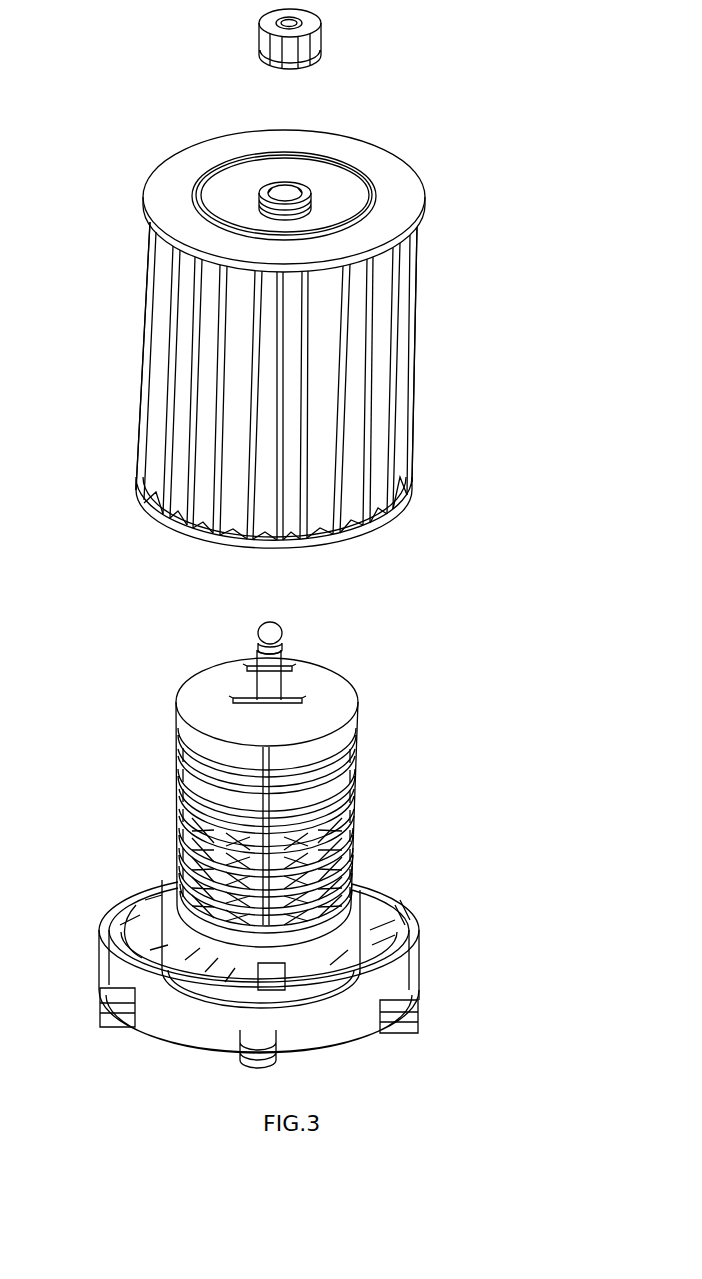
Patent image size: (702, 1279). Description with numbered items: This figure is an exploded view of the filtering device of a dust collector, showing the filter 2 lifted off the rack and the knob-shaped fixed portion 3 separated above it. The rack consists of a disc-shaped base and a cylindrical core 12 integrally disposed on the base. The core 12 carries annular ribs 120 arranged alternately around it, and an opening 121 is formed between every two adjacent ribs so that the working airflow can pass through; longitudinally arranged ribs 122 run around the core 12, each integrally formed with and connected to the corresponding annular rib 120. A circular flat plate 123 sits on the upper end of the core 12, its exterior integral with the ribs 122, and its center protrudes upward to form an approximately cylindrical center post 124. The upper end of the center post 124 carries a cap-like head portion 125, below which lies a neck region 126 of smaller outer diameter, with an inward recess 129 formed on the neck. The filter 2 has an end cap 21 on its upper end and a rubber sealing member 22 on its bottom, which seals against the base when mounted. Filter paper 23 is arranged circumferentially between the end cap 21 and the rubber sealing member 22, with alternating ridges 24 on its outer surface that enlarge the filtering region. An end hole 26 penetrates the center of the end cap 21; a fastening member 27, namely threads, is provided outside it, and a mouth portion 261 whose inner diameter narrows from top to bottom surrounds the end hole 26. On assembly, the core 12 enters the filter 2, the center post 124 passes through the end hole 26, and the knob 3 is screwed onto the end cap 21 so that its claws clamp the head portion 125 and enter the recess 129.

The fixed portion 3 is at (322, 41).
The end cap 21 is at (378, 197).
The end hole 26 is at (285, 190).
The mouth portion 261 is at (270, 195).
The fastening member 27 is at (262, 205).
The filter paper 23 is at (390, 307).
The filter 2 is at (462, 361).
The ridges 24 is at (370, 393).
The rubber sealing member 22 is at (400, 520).
The head portion 125 is at (265, 628).
The inward recess 129 is at (282, 643).
The neck region 126 is at (248, 672).
The center post 124 is at (280, 681).
The circular flat plate 123 is at (325, 712).
The core 12 is at (357, 778).
The annular ribs 120 is at (355, 810).
The opening 121 is at (345, 842).
The ribs 122 is at (335, 878).